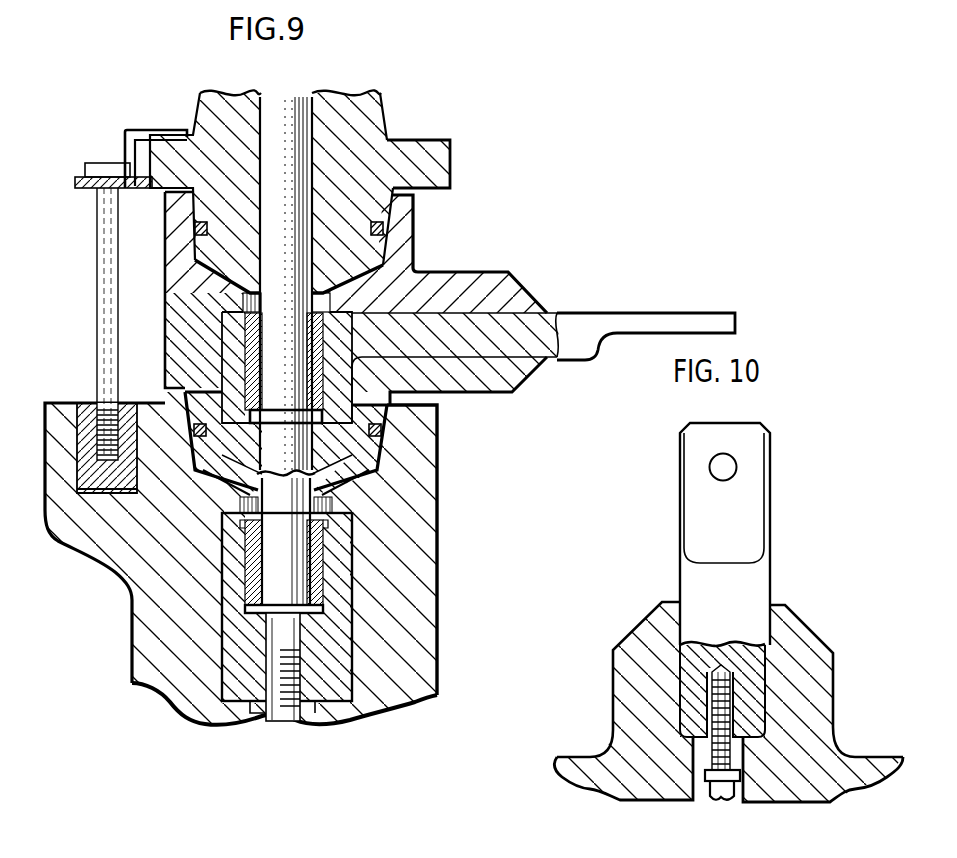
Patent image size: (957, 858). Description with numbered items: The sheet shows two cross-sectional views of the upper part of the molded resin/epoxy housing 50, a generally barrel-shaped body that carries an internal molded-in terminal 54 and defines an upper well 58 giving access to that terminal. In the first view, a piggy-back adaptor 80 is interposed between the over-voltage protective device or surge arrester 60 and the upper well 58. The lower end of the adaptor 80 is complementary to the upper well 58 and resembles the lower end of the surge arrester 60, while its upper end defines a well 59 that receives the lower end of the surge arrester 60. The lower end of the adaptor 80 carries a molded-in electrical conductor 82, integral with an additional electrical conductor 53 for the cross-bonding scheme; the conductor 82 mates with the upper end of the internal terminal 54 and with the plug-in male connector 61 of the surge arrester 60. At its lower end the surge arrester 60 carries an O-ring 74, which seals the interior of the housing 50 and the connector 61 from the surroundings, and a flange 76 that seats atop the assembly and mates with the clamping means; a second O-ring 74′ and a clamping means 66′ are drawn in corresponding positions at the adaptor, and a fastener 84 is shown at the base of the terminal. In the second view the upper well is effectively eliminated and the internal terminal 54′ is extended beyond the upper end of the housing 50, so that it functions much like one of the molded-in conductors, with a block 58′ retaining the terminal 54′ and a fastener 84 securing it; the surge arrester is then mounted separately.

In FIG. 9, the housing 50 is at (437, 555).
In FIG. 10, the housing 50 is at (817, 642).
In FIG. 9, the additional electrical conductor 53 is at (596, 322).
In FIG. 9, the internal terminal 54 is at (330, 668).
In FIG. 10, the internal terminal 54′ is at (748, 597).
In FIG. 9, the upper well 58 is at (367, 472).
In FIG. 10, the nut block 58′ is at (683, 620).
In FIG. 9, the well 59 is at (415, 270).
In FIG. 9, the over-voltage protection device 60 is at (383, 128).
In FIG. 9, the plug-in connector 61 is at (280, 124).
In FIG. 9, the mounting bolt bracket 66′ is at (85, 259).
In FIG. 9, the O-ring 74 is at (383, 230).
In FIG. 9, the lower seal 74′ is at (377, 433).
In FIG. 9, the flange 76 is at (443, 170).
In FIG. 9, the adaptor 80 is at (520, 383).
In FIG. 9, the molded-in electrical conductor 82 is at (290, 578).
In FIG. 9, the screw 84 is at (278, 692).
In FIG. 10, the screw 84 is at (715, 795).